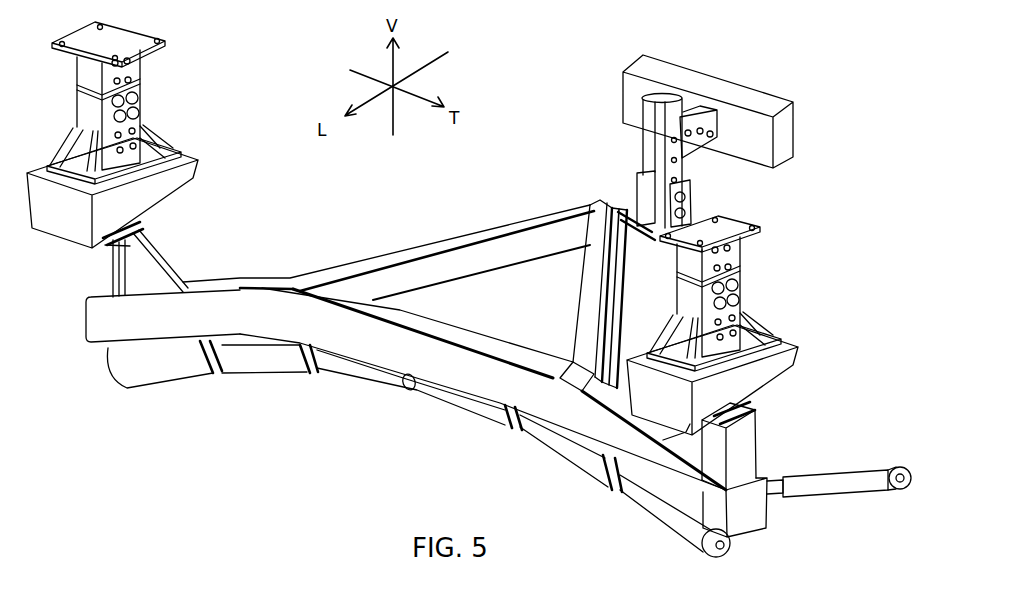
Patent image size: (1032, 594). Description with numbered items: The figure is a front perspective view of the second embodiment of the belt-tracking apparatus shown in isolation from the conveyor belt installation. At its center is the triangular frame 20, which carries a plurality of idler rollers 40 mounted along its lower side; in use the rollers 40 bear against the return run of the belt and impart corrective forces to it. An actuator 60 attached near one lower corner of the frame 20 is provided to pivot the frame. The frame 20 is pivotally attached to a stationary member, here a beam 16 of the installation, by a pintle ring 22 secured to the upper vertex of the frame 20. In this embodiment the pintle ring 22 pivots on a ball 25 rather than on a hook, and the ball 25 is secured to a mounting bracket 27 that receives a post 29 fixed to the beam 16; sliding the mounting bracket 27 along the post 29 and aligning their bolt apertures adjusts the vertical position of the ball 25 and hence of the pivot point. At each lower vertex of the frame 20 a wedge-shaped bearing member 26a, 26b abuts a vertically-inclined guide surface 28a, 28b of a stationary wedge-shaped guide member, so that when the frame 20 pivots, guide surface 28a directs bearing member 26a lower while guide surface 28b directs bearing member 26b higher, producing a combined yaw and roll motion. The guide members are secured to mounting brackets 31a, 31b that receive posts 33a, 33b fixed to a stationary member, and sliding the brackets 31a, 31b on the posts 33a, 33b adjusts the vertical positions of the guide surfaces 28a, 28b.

The beam 16 is at (750, 87).
The frame 20 is at (88, 338).
The pintle ring 22 is at (630, 232).
The ball 25 is at (647, 221).
The bearing member 26a is at (143, 230).
The bearing member 26b is at (752, 410).
The mounting bracket 27 is at (691, 194).
The guide surface 28a is at (193, 173).
The guide surface 28b is at (847, 403).
The post 29 is at (643, 144).
The mounting bracket 31a is at (146, 108).
The mounting bracket 31b is at (748, 298).
The post 33a is at (160, 50).
The post 33b is at (752, 236).
The idler rollers 40 is at (281, 375).
The actuator 60 is at (838, 497).